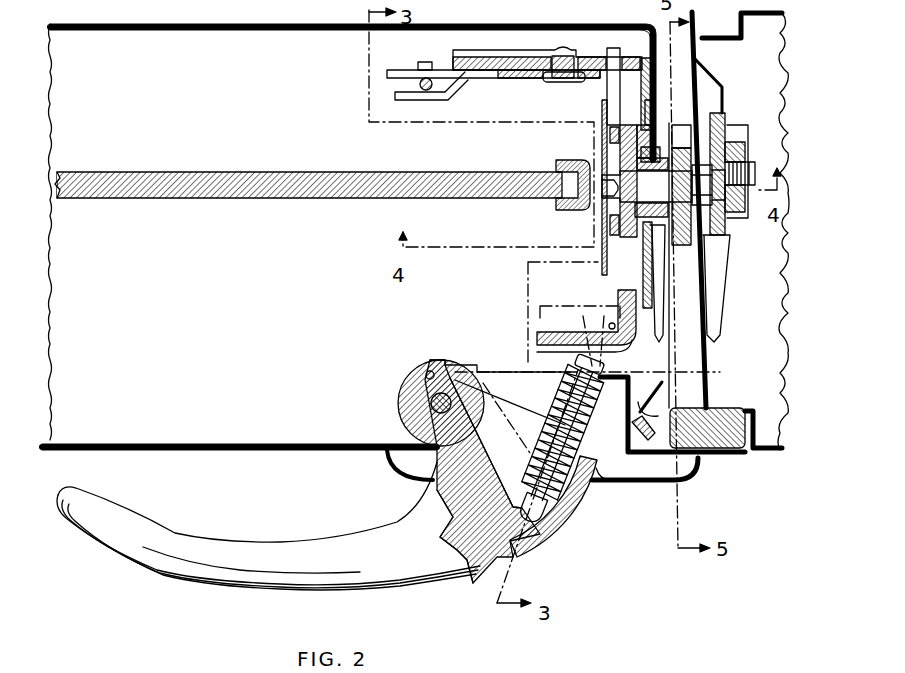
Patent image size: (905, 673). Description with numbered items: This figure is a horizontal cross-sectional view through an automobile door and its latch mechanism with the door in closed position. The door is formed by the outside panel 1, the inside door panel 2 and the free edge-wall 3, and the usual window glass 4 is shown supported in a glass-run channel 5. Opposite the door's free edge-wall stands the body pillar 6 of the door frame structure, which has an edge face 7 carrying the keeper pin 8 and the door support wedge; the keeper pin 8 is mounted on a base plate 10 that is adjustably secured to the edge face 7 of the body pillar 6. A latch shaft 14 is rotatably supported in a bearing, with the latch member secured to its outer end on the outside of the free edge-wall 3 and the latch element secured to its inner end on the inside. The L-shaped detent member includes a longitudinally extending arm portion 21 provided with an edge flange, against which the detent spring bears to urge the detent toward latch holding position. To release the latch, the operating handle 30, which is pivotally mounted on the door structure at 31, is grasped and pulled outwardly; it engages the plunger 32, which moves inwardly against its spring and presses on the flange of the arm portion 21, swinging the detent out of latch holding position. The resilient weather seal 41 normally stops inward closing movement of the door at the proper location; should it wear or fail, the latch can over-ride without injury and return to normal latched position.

The outside panel 1 is at (236, 444).
The inside door panel 2 is at (258, 32).
The free edge-wall 3 is at (653, 30).
The window glass 4 is at (260, 172).
The glass-run channel 5 is at (578, 160).
The body pillar 6 is at (775, 14).
The edge face 7 is at (708, 370).
The keeper pin 8 is at (715, 234).
The base plate 10 is at (718, 113).
The latch shaft 14 is at (640, 196).
The longitudinally extending arm portion 21 is at (540, 328).
The operating handle 30 is at (276, 540).
The pivotal mounting 31 is at (412, 400).
The plunger 32 is at (603, 356).
The resilient weather seal 41 is at (727, 410).